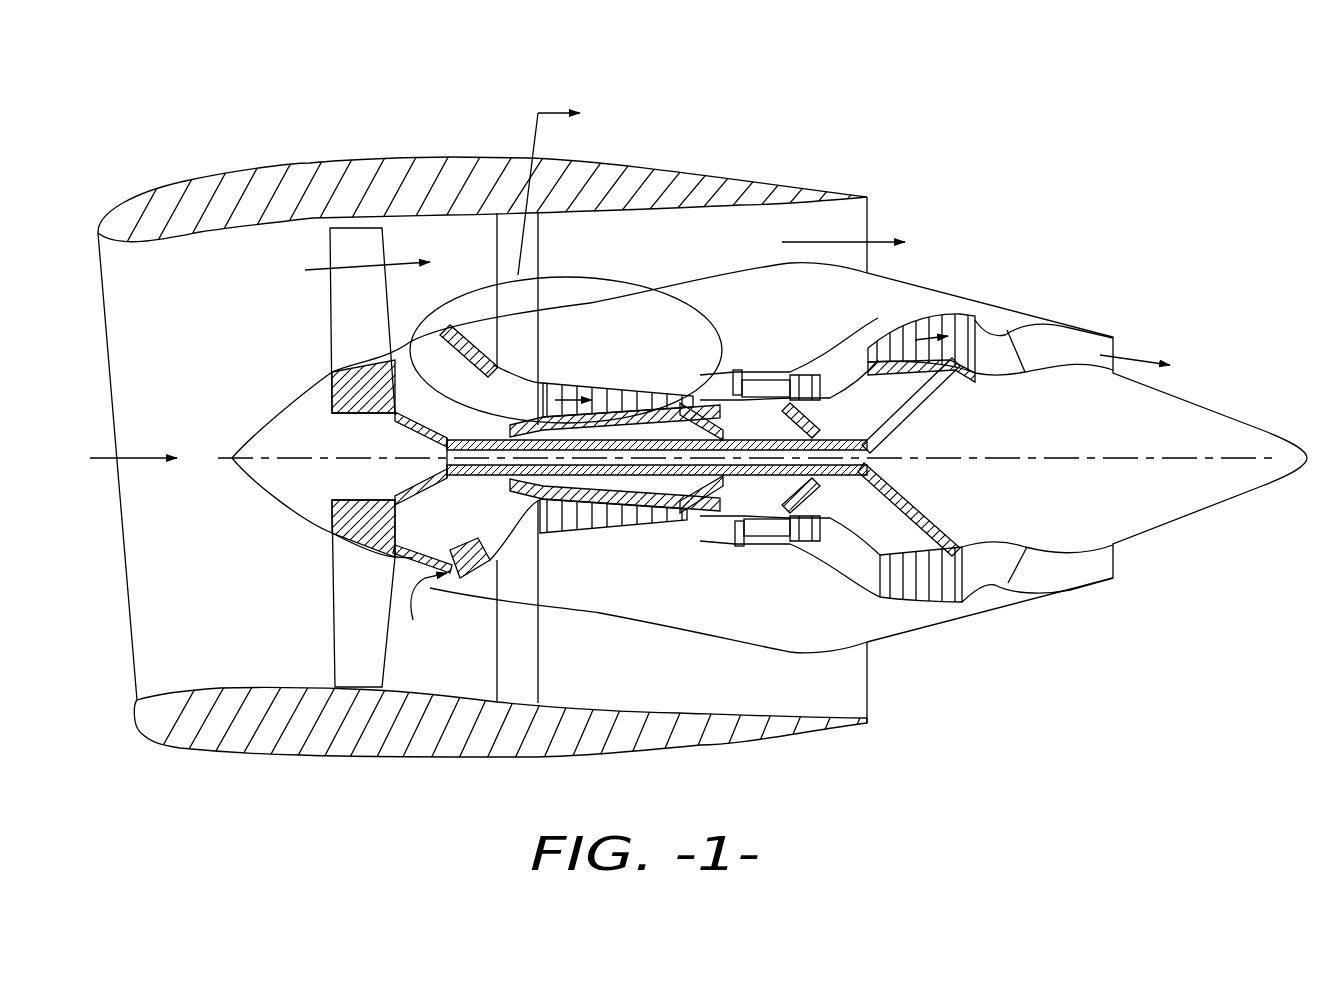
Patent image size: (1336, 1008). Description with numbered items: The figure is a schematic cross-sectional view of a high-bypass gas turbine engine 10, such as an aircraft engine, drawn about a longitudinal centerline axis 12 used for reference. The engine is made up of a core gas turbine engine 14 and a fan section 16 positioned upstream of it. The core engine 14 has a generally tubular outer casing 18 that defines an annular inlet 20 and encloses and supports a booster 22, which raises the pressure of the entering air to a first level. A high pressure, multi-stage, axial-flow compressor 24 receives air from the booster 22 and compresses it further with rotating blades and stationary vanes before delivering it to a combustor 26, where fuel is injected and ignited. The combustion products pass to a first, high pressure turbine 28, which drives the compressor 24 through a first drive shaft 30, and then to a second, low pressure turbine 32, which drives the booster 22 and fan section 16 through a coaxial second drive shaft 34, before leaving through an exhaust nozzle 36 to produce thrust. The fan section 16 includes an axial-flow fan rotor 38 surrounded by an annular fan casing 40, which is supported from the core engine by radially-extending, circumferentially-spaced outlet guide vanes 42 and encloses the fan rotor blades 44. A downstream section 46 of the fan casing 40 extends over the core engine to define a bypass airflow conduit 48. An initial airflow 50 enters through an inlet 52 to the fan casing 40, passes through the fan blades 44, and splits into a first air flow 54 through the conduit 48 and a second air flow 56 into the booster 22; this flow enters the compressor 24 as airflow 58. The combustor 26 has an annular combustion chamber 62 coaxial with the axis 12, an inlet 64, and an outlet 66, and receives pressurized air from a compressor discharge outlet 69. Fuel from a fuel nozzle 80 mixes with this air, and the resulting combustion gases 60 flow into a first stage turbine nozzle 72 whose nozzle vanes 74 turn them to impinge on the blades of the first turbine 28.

The gas turbine engine 10 is at (1040, 232).
The longitudinal centerline axis 12 is at (1038, 456).
The core gas turbine engine 14 is at (752, 332).
The fan section 16 is at (402, 142).
The outer casing 18 is at (722, 636).
The annular inlet 20 is at (428, 612).
The booster 22 is at (500, 548).
The high pressure compressor 24 is at (572, 535).
The combustor 26 is at (742, 538).
The first (high pressure) turbine 28 is at (823, 535).
The first (high pressure) drive shaft 30 is at (800, 402).
The second (low pressure) turbine 32 is at (965, 603).
The second (low pressure) drive shaft 34 is at (447, 427).
The exhaust nozzle 36 is at (1115, 345).
The fan rotor 38 is at (385, 422).
The fan casing 40 is at (398, 758).
The outlet guide vanes 42 is at (540, 258).
The fan rotor blades 44 is at (330, 633).
The downstream section of the fan casing 46 is at (770, 185).
The bypass airflow conduit 48 is at (694, 254).
The initial airflow 50 is at (137, 457).
The inlet 52 is at (130, 683).
The first air flow 54 is at (338, 268).
The second air flow 56 is at (413, 338).
The compressed airflow entering the high pressure compressor 58 is at (560, 383).
The combustion products 60 is at (800, 373).
The annular combustion chamber 62 is at (757, 540).
The combustor inlet 64 is at (733, 378).
The combustor outlet 66 is at (800, 375).
The high pressure compressor discharge outlet 69 is at (725, 532).
The first stage turbine nozzle 72 is at (790, 540).
The nozzle vanes 74 is at (790, 513).
The fuel nozzle 80 is at (728, 375).